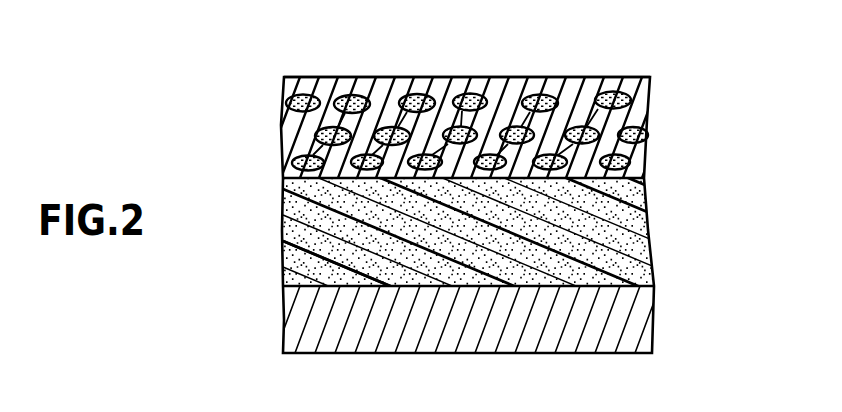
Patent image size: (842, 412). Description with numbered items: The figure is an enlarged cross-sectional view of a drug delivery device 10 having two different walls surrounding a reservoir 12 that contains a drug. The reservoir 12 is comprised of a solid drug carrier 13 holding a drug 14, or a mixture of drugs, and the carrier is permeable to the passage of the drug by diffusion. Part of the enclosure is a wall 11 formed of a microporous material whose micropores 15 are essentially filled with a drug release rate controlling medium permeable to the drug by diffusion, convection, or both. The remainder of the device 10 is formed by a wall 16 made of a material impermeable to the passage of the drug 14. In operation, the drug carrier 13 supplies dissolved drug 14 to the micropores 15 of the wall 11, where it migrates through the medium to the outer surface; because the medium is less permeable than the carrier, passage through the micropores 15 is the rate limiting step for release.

The drug delivery device 10 is at (672, 197).
The wall 11 is at (585, 87).
The reservoir 12 is at (622, 278).
The drug carrier 13 is at (283, 263).
The drug 14 is at (415, 96).
The micropores 15 is at (637, 100).
The wall 16 is at (643, 320).